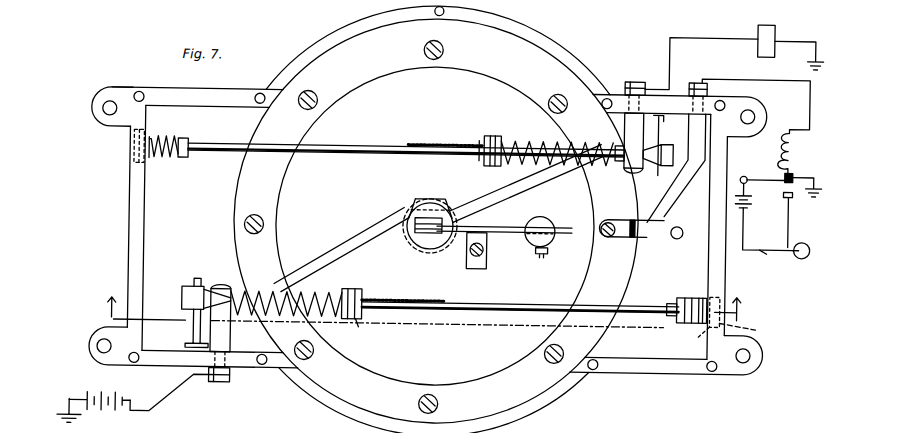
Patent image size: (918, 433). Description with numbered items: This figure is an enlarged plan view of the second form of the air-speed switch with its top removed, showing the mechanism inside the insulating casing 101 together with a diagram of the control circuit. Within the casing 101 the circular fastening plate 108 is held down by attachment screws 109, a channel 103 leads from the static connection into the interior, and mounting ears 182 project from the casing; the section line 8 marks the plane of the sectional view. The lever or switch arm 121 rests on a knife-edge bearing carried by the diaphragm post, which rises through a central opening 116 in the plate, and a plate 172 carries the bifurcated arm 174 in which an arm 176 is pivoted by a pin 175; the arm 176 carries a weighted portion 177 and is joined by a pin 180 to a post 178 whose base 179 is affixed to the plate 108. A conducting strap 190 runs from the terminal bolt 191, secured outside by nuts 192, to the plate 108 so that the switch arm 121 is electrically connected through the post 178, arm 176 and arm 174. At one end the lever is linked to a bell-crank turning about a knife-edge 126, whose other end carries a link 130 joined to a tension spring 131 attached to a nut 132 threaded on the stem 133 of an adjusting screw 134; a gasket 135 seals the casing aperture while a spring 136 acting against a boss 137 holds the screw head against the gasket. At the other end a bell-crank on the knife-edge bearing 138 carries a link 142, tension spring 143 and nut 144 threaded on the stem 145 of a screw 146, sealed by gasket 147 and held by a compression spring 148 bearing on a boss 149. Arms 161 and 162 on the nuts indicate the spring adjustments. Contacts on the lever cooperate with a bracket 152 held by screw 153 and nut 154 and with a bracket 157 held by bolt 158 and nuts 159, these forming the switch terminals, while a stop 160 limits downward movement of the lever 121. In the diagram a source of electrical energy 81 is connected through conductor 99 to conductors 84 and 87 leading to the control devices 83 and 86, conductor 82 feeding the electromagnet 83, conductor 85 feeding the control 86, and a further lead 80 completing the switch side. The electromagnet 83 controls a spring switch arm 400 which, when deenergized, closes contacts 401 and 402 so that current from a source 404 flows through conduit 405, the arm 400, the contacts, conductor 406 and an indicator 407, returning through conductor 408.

The section line 8- 8 is at (422, 311).
The conductor 80 is at (137, 411).
The source of electrical energy 81 is at (104, 396).
The conductor 82 is at (788, 124).
The electromagnet 83 is at (795, 146).
The conductor 84 is at (805, 166).
The electrical conductor 85 is at (697, 34).
The electrical control device 86 is at (755, 30).
The conductor 87 is at (790, 36).
The conductor 99 is at (72, 404).
The casing 101 is at (628, 370).
The channel 103 is at (671, 232).
The fastening plate 108 is at (605, 292).
The attachment screws 109 is at (314, 93).
The pivot boss 116 is at (406, 212).
The lever or switch arm 121 is at (318, 272).
The knife-edge 126 is at (195, 332).
The link 130 is at (212, 290).
The tension spring 131 is at (260, 288).
The nut 132 is at (362, 324).
The stem 133 is at (425, 302).
The screw 134 is at (757, 325).
The gasket or washer 135 is at (706, 326).
The spring 136 is at (700, 294).
The boss 137 is at (681, 294).
The knife-edge bearing 138 is at (661, 138).
The link 142 is at (652, 163).
The tension spring 143 is at (530, 138).
The nut 144 is at (492, 134).
The stem 145 is at (372, 146).
The screw 146 is at (133, 143).
The gasket or washer 147 is at (138, 168).
The compression spring 148 is at (160, 139).
The boss 149 is at (182, 161).
The bracket 152 is at (618, 160).
The screw 153 is at (630, 79).
The nut 154 is at (638, 79).
The bracket 157 is at (232, 330).
The bolt 158 is at (222, 385).
The nuts 159 is at (211, 376).
The stop 160 is at (623, 127).
The arm 161 is at (362, 296).
The arm 162 is at (487, 160).
The plate 172 is at (431, 199).
The bifurcated arm 174 is at (416, 240).
The pin 175 is at (432, 234).
The arm 176 is at (534, 215).
The weighted portion 177 is at (549, 246).
The post 178 is at (496, 232).
The base 179 is at (482, 268).
The pin 180 is at (490, 250).
The mounting ears 182 is at (93, 106).
The electrical conducting strap 190 is at (681, 190).
The terminal or bolt 191 is at (702, 79).
The nuts 192 is at (690, 79).
The spring switch arm 400 is at (766, 175).
The contact 401 is at (782, 168).
The contact 402 is at (793, 193).
The source of energy 404 is at (745, 230).
The conduit 405 is at (752, 193).
The conductor 406 is at (790, 224).
The indicator 407 is at (803, 253).
The conductor 408 is at (766, 249).